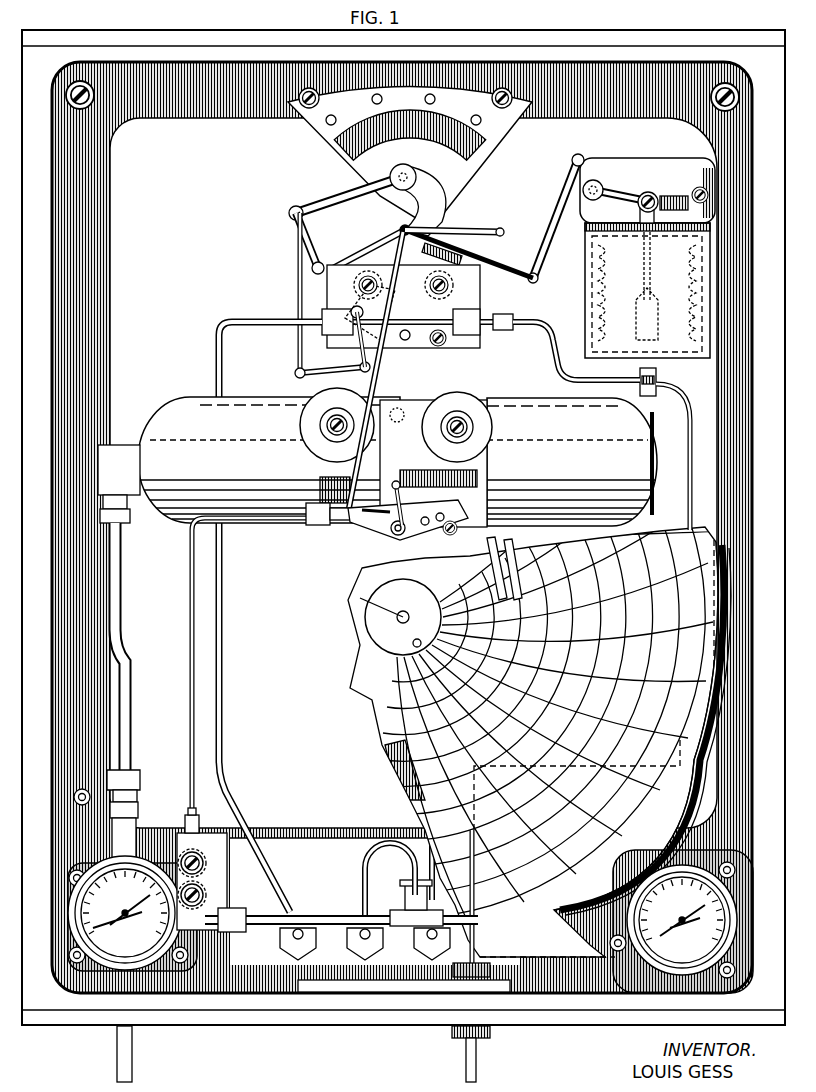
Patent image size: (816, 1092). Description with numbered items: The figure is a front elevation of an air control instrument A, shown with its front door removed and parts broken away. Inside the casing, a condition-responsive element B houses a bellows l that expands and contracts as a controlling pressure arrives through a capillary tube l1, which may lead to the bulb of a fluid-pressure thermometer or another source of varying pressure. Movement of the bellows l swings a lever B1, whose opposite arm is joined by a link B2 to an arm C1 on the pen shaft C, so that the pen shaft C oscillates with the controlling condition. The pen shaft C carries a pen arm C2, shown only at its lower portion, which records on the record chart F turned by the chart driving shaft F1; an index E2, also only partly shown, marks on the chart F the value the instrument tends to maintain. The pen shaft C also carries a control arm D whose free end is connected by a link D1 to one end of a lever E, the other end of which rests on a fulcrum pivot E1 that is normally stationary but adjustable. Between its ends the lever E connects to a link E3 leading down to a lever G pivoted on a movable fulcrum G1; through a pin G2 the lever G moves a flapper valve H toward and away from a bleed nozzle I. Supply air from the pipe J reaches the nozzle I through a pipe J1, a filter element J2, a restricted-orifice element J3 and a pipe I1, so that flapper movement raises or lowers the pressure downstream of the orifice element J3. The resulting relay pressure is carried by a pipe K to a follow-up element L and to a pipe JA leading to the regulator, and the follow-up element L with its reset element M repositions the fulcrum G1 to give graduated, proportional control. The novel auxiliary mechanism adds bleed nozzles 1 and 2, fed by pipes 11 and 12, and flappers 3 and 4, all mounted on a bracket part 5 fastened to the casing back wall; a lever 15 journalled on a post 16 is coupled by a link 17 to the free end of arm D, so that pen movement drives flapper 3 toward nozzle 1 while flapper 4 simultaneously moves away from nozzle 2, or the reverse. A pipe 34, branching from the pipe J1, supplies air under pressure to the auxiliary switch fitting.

The air control instrument A is at (268, 1018).
The element responsive to a controlling condition B is at (637, 277).
The lever B1 is at (552, 226).
The link B2 is at (526, 266).
The pen shaft C is at (401, 166).
The arm C1 is at (437, 207).
The pen arm C2 is at (536, 585).
The control arm D is at (330, 200).
The link D1 is at (306, 235).
The lever E is at (358, 255).
The fulcrum pivot E1 is at (502, 229).
The index E2 is at (503, 600).
The link E3 is at (360, 484).
The record chart F is at (374, 696).
The chart driving shaft F1 is at (370, 600).
The lever G is at (350, 524).
The movable fulcrum pivot G1 is at (400, 536).
The pin G2 is at (400, 490).
The flapper valve H is at (399, 420).
The bleed nozzle I is at (385, 512).
The pipe I1 is at (188, 580).
The pipe J is at (690, 1030).
The pipe J1 is at (334, 930).
The filter element J2 is at (212, 932).
The restricted orifice element J3 is at (183, 826).
The pipe JA is at (133, 1055).
The pipe K is at (118, 602).
The follow-up element L is at (170, 402).
The reset or compensating element M is at (540, 406).
The bellows l is at (596, 278).
The capillary tube l1 is at (694, 450).
The bleed nozzle 1 is at (355, 306).
The bleed nozzle 2 is at (440, 330).
The flapper valve 3 is at (446, 278).
The flapper valve 4 is at (362, 276).
The bracket part 5 is at (480, 290).
The pipe 11 is at (236, 326).
The pipe 12 is at (532, 324).
The lever 15 is at (308, 378).
The post 16 is at (407, 340).
The link 17 is at (298, 350).
The pipe 34 is at (362, 885).